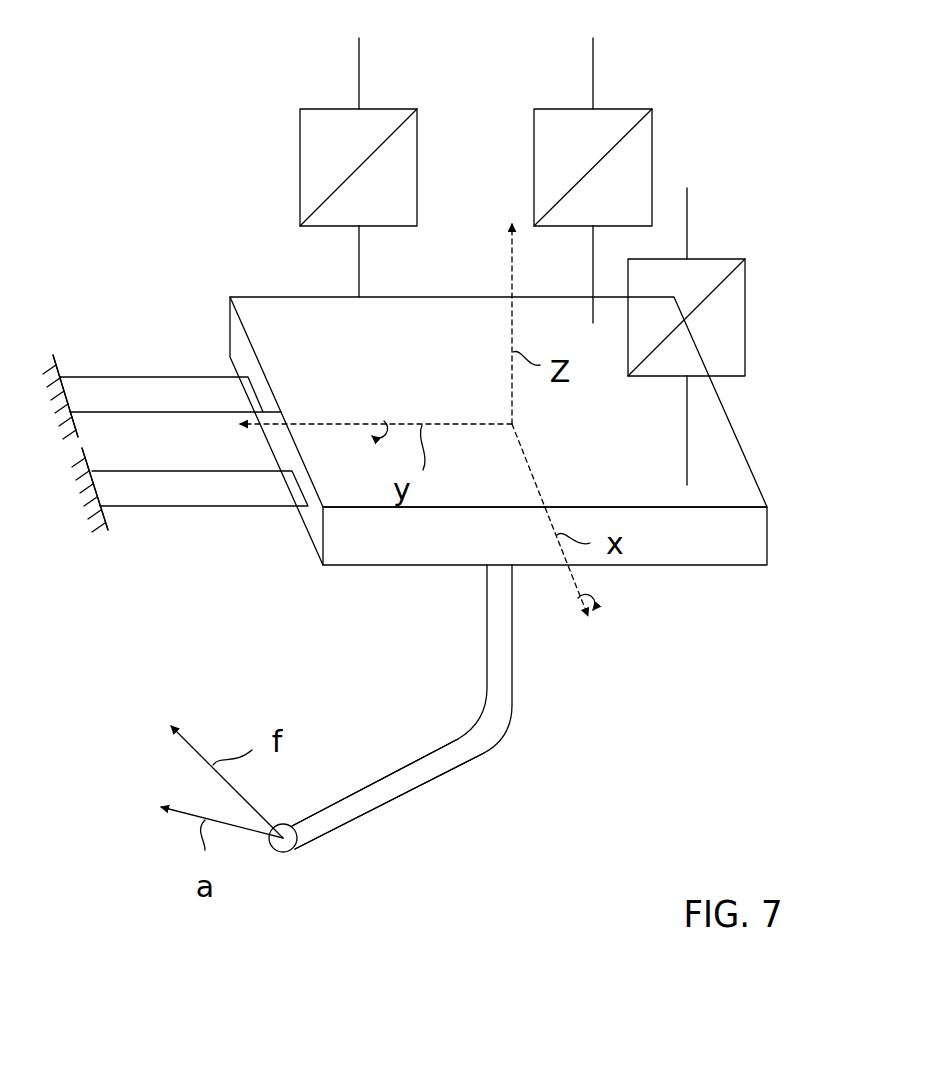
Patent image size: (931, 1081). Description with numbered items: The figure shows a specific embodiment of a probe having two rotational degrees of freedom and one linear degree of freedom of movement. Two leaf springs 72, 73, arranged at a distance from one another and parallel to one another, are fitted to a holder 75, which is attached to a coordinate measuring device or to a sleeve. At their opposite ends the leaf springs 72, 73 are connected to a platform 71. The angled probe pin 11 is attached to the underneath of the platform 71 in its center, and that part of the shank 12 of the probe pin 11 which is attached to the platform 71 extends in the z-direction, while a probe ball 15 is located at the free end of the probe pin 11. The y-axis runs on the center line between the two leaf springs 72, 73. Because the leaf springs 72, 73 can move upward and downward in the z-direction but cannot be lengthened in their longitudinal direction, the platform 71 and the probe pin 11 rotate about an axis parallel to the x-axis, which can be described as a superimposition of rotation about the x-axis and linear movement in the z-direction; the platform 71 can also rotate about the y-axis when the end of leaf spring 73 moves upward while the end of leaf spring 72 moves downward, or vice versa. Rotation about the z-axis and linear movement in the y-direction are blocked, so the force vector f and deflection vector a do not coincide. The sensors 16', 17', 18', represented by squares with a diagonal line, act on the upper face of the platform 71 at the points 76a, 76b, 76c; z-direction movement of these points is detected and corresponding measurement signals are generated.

The probe pin 11 is at (513, 705).
The shank 12 is at (400, 790).
The probe ball 15 is at (285, 852).
The sensor 16' is at (731, 279).
The sensor 17' is at (637, 129).
The sensor 18' is at (401, 129).
The platform 71 is at (702, 568).
The leaf spring 72 is at (180, 506).
The leaf spring 73 is at (135, 377).
The holder 75 is at (90, 500).
The sensing point 76a is at (359, 318).
The sensing point 76b is at (593, 323).
The sensing point 76c is at (687, 485).